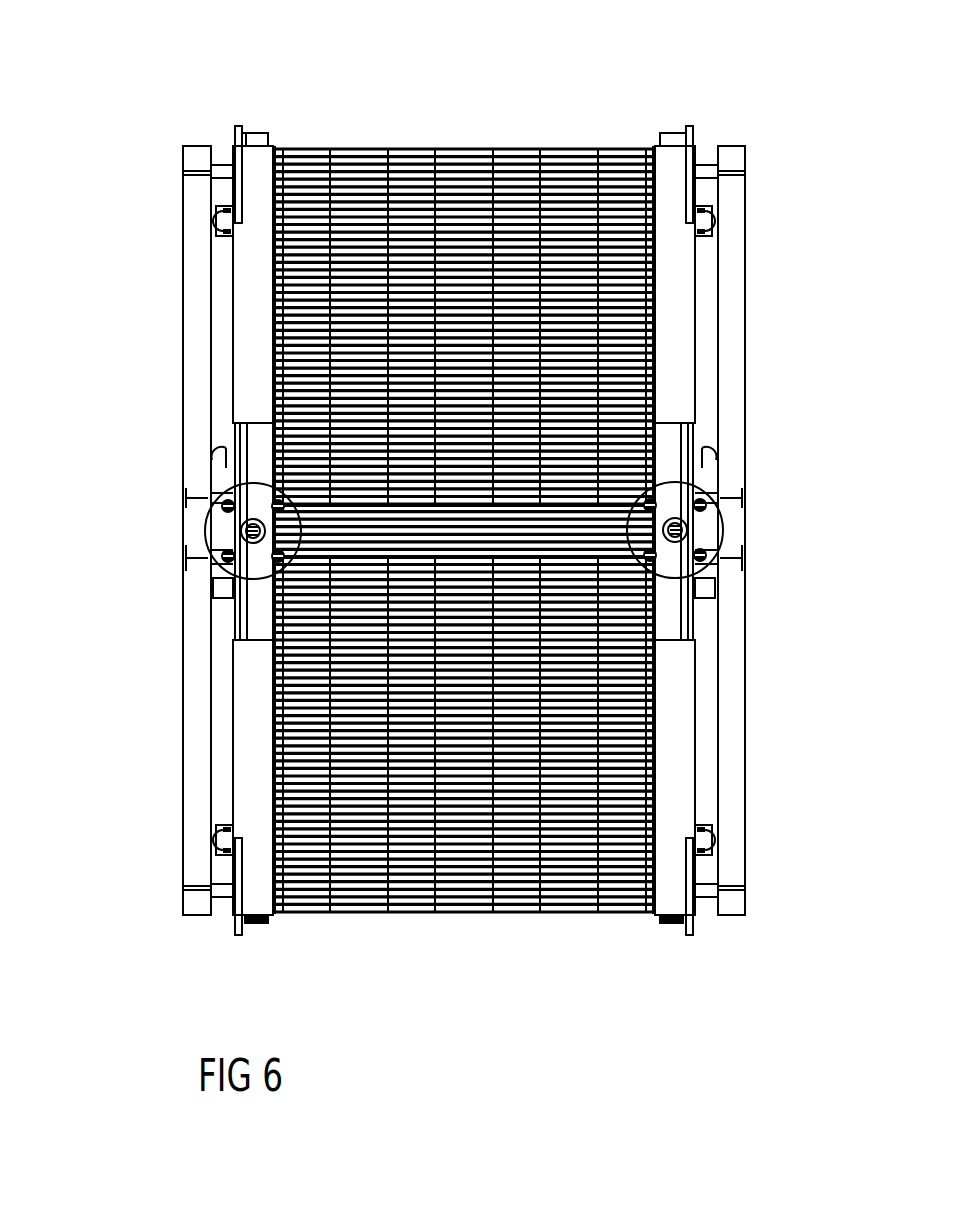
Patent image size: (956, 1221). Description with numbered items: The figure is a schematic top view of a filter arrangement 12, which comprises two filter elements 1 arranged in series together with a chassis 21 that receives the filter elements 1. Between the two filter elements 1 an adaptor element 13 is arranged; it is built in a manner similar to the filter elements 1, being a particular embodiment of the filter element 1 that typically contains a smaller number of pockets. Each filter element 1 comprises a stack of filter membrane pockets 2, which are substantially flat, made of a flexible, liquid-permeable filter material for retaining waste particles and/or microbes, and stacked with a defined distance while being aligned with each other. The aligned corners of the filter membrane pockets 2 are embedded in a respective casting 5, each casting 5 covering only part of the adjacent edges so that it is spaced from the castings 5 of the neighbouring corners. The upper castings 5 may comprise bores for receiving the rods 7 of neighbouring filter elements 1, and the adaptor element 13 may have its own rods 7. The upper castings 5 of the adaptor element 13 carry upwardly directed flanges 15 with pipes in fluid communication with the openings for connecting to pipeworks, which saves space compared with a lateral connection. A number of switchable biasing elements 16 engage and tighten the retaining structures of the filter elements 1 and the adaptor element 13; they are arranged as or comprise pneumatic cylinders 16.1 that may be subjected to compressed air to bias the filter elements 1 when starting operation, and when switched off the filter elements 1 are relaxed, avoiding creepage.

The filter element 1 is at (652, 265).
The filter membrane pocket 2 is at (290, 518).
The casting 5 is at (230, 332).
The rod 7 is at (232, 118).
The filter arrangement 12 is at (226, 98).
The adaptor element 13 is at (604, 486).
The flange 15 is at (220, 520).
The biasing element 16 is at (206, 211).
The pneumatic cylinder 16.1 is at (206, 211).
The chassis 21 is at (190, 268).